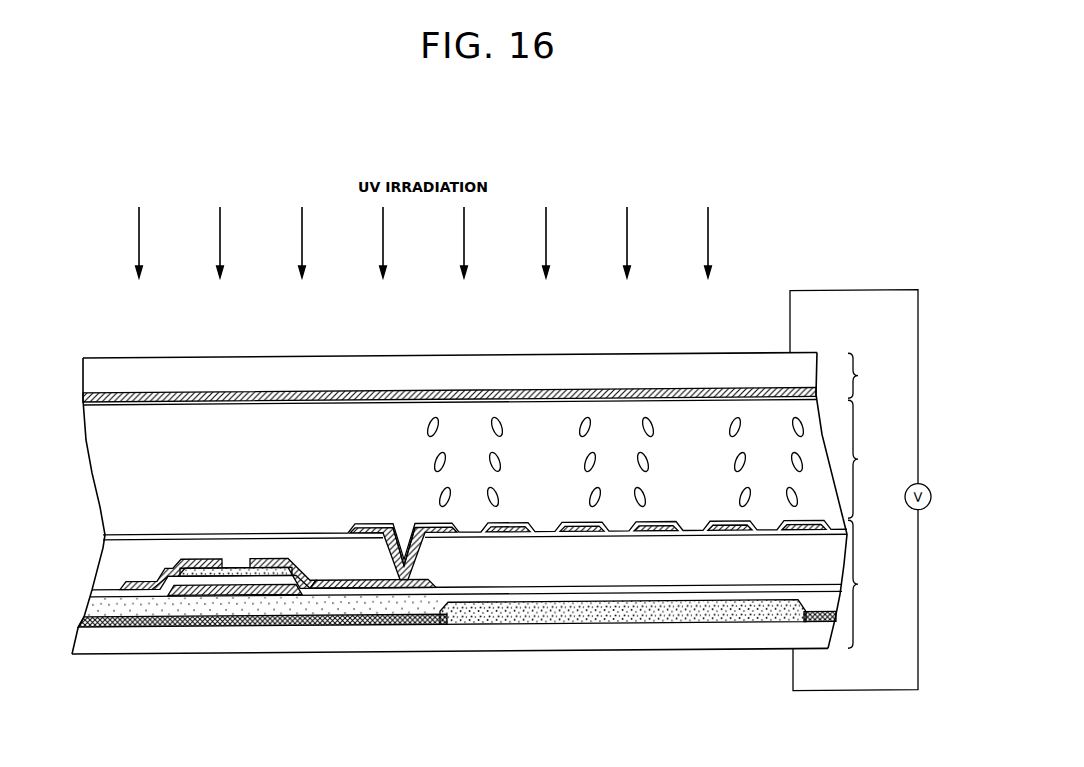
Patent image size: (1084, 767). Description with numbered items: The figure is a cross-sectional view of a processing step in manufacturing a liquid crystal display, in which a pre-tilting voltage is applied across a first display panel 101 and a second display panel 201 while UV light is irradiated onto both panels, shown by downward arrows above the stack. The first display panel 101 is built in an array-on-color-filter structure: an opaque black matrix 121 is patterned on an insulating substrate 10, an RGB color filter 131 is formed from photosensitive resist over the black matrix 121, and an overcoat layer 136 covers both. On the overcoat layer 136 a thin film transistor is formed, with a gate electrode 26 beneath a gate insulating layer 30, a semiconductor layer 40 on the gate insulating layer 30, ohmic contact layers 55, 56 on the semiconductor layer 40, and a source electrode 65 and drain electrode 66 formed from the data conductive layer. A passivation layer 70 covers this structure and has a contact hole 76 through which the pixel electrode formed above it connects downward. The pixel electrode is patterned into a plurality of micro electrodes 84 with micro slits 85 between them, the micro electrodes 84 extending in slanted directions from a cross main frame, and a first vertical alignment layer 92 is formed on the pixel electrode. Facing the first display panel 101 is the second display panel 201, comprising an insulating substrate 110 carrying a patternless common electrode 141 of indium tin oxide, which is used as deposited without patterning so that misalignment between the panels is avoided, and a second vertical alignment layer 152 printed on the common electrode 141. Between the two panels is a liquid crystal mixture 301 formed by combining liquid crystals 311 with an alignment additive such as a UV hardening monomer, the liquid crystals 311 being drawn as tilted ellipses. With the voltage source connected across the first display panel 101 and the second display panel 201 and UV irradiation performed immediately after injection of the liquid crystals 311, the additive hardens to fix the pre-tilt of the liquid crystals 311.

The insulating substrate 10 is at (418, 637).
The gate electrode 26 is at (247, 569).
The gate insulating layer 30 is at (362, 591).
The semiconductor layer 40 is at (223, 577).
The ohmic contact layer 55 is at (190, 593).
The ohmic contact layer 56 is at (273, 564).
The source electrode 65 is at (162, 581).
The drain electrode 66 is at (312, 583).
The passivation layer 70 is at (106, 600).
The contact hole 76 is at (404, 529).
The micro electrodes 84 is at (441, 535).
The micro slits 85 is at (467, 541).
The first vertical alignment layer 92 is at (652, 592).
The first display panel 101 is at (869, 584).
The insulating substrate 110 is at (426, 372).
The black matrix 121 is at (90, 630).
The color filter 131 is at (722, 613).
The overcoat layer 136 is at (133, 591).
The common electrode 141 is at (591, 396).
The second vertical alignment layer 152 is at (758, 392).
The second display panel 201 is at (869, 375).
The liquid crystal mixture 301 is at (869, 459).
The liquid crystals 311 is at (661, 430).